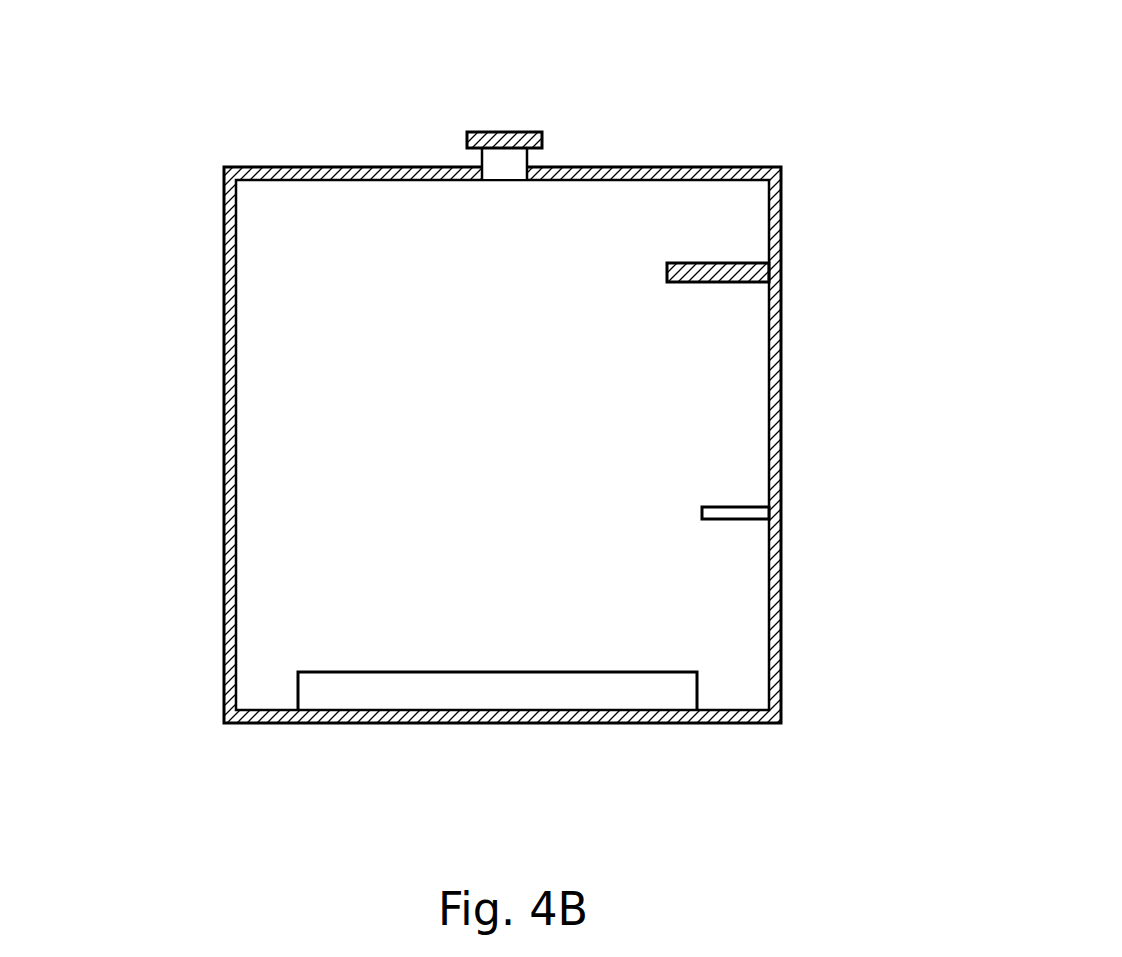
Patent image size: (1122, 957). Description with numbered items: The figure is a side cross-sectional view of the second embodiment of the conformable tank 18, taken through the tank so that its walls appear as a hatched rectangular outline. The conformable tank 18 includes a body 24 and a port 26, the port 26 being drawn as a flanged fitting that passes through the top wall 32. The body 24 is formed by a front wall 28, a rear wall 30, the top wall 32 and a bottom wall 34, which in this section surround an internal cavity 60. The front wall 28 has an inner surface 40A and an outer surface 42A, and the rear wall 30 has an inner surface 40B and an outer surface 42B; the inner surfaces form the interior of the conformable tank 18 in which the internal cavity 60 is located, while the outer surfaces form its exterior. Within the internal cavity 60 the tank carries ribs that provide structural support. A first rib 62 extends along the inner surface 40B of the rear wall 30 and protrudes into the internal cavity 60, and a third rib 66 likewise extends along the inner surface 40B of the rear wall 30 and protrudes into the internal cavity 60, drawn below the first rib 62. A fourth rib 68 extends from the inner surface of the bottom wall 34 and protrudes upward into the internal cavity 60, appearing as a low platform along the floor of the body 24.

The conformable tank 18 is at (845, 68).
The body 24 is at (208, 215).
The port 26 is at (503, 140).
The front wall 28 is at (232, 628).
The rear wall 30 is at (783, 582).
The top wall 32 is at (693, 167).
The bottom wall 34 is at (510, 722).
The inner surface 40A is at (240, 376).
The inner surface 40B is at (766, 339).
The outer surface 42A is at (223, 450).
The outer surface 42B is at (783, 436).
The internal cavity 60 is at (710, 597).
The first rib 62 is at (712, 272).
The third rib 66 is at (745, 508).
The fourth rib 68 is at (568, 686).